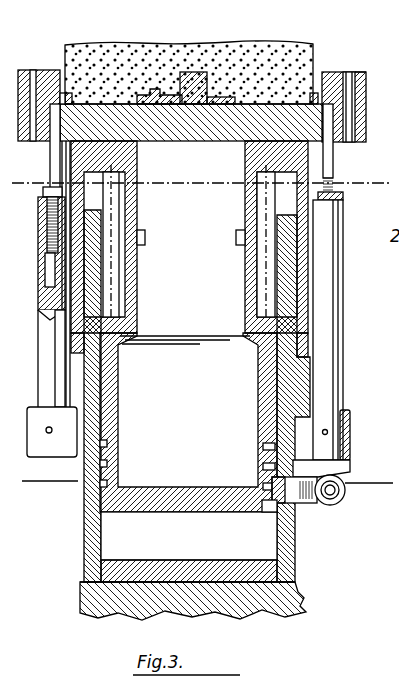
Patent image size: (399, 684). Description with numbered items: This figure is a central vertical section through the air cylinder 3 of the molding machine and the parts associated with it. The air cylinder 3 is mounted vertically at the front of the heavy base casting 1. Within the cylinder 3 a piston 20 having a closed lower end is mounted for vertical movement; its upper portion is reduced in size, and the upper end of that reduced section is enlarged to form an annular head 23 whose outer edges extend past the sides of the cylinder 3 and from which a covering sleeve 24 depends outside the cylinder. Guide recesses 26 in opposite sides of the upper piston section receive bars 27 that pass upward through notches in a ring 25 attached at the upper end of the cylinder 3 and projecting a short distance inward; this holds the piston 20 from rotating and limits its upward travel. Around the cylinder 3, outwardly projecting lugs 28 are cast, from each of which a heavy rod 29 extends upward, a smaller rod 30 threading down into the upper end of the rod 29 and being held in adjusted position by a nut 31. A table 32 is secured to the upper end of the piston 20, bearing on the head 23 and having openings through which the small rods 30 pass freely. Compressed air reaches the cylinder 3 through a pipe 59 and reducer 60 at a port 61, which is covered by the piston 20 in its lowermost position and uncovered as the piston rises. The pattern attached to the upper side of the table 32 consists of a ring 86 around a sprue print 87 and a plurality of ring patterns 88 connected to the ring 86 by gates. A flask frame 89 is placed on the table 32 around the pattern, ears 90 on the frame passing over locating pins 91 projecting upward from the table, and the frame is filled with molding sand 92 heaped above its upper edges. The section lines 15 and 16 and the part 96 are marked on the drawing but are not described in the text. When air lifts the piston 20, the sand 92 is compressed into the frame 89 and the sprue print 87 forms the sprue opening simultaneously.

The base casting 1 is at (115, 603).
The air cylinder 3 is at (88, 515).
The section line 15 is at (200, 173).
The section line 16 is at (203, 471).
The piston 20 is at (118, 411).
The annular head 23 is at (118, 153).
The covering sleeve 24 is at (72, 318).
The ring 25 is at (95, 226).
The guide recesses 26 is at (137, 273).
The bars 27 is at (116, 296).
The lugs 28 is at (55, 452).
The rod 29 is at (62, 388).
The small rod 30 is at (50, 152).
The nut 31 is at (43, 192).
The table 32 is at (365, 131).
The pipe 59 is at (336, 504).
The reducer 60 is at (304, 503).
The port 61 is at (262, 508).
The ring 86 is at (156, 89).
The sprue print 87 is at (193, 72).
The ring patterns 88 is at (72, 96).
The flask frame 89 is at (66, 93).
The ears 90 is at (363, 72).
The locating pins 91 is at (33, 70).
The molding sand 92 is at (245, 50).
The part 96 is at (387, 562).